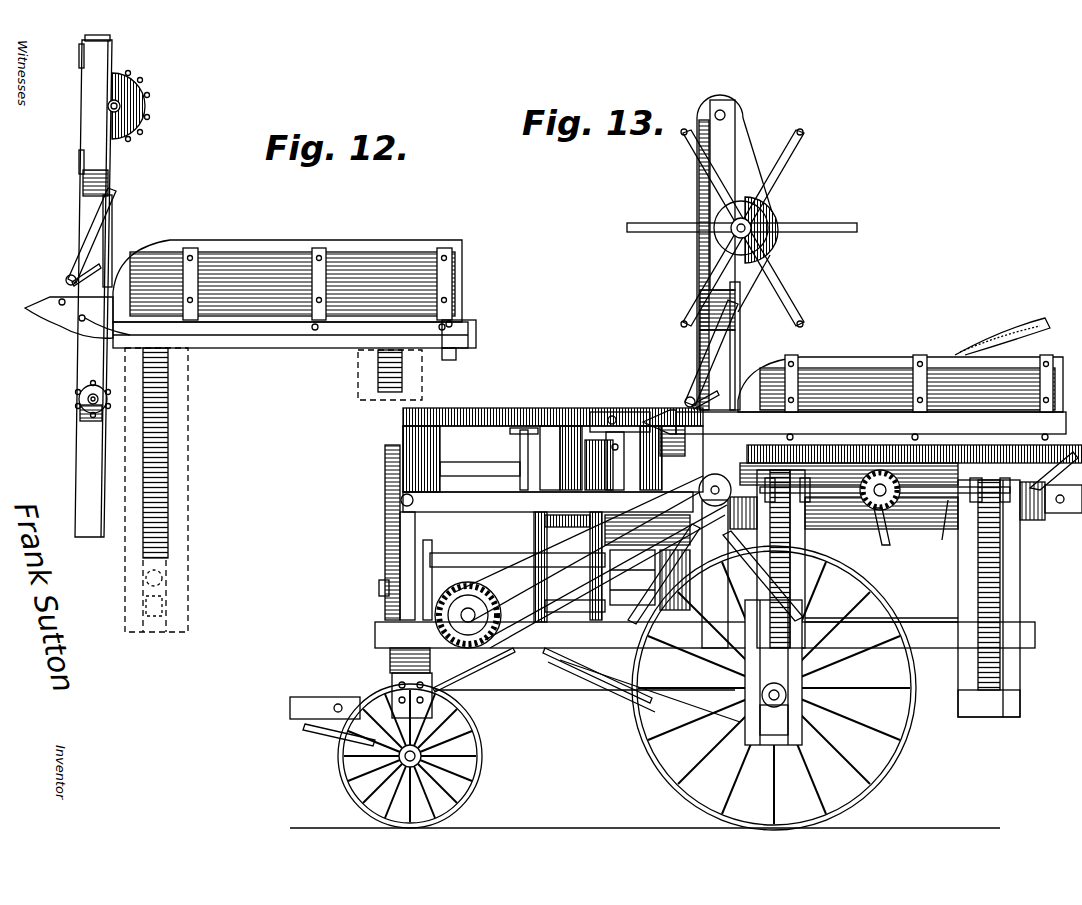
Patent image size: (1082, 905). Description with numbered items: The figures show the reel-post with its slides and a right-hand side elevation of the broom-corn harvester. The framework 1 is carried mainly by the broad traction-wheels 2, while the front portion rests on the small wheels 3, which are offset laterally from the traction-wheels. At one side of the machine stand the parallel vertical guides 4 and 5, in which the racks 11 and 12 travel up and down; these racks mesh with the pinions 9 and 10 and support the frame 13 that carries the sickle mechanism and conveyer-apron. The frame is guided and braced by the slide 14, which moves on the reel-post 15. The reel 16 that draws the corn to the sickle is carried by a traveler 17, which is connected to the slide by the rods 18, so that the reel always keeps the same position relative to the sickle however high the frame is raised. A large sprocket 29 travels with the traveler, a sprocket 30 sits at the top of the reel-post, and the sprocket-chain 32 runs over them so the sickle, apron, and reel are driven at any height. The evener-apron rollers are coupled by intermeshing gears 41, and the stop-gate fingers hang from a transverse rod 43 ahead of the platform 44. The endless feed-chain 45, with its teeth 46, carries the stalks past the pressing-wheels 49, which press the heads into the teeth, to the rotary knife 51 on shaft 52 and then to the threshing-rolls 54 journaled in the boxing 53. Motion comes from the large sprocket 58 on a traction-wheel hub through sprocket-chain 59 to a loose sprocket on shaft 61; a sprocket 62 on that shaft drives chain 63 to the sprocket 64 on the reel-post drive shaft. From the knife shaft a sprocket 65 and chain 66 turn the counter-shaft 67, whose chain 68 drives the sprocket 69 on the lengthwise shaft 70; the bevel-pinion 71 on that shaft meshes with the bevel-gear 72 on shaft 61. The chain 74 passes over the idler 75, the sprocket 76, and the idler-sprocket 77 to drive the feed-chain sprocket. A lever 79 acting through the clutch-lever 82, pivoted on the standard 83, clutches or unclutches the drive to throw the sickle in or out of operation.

In FIG. 13, the framework 1 is at (1015, 640).
In FIG. 13, the traction-wheels 2 is at (893, 755).
In FIG. 13, the small wheels 3 is at (482, 772).
In FIG. 12, the guide 4 is at (184, 470).
In FIG. 13, the guide 4 is at (800, 550).
In FIG. 12, the guide 5 is at (360, 396).
In FIG. 13, the guide 5 is at (1018, 560).
In FIG. 13, the pinion 9 is at (870, 490).
In FIG. 13, the pinion 10 is at (1000, 518).
In FIG. 12, the rack 11 is at (170, 384).
In FIG. 13, the rack 11 is at (790, 590).
In FIG. 12, the rack 12 is at (378, 370).
In FIG. 13, the rack 12 is at (1000, 588).
In FIG. 12, the frame 13 is at (365, 258).
In FIG. 13, the frame 13 is at (876, 364).
In FIG. 12, the slide 14 is at (100, 328).
In FIG. 13, the slide 14 is at (686, 400).
In FIG. 12, the reel-post 15 is at (106, 244).
In FIG. 13, the reel-post 15 is at (726, 364).
In FIG. 13, the reel 16 is at (832, 222).
In FIG. 12, the traveler 17 is at (92, 131).
In FIG. 13, the traveler 17 is at (713, 258).
In FIG. 12, the rods 18 is at (113, 205).
In FIG. 13, the rods 18 is at (695, 382).
In FIG. 12, the large sprocket-wheel 29 is at (150, 104).
In FIG. 13, the large sprocket-wheel 29 is at (777, 243).
In FIG. 13, the sprocket 30 is at (738, 104).
In FIG. 13, the sprocket-chain 32 is at (750, 292).
In FIG. 13, the intermeshing gears 41 is at (614, 500).
In FIG. 13, the transverse rod 43 is at (610, 414).
In FIG. 13, the platform 44 is at (463, 526).
In FIG. 13, the feed-chain 45 is at (556, 500).
In FIG. 13, the teeth 46 is at (534, 548).
In FIG. 13, the pressing-wheels 49 is at (563, 426).
In FIG. 13, the rotary knife 51 is at (520, 455).
In FIG. 13, the shaft 52 is at (470, 463).
In FIG. 13, the boxing 53 is at (584, 500).
In FIG. 13, the threshing-rolls 54 is at (664, 574).
In FIG. 13, the large sprocket 58 is at (822, 684).
In FIG. 13, the sprocket-chain 59 is at (590, 690).
In FIG. 13, the shaft 61 is at (455, 628).
In FIG. 13, the sprocket 62 is at (375, 697).
In FIG. 13, the chain 63 is at (527, 639).
In FIG. 12, the sprocket 64 is at (78, 399).
In FIG. 13, the sprocket 64 is at (714, 574).
In FIG. 13, the sprocket 65 is at (385, 455).
In FIG. 13, the chain 66 is at (400, 506).
In FIG. 13, the counter-shaft 67 is at (517, 552).
In FIG. 13, the chain 68 is at (660, 639).
In FIG. 13, the sprocket 69 is at (617, 639).
In FIG. 13, the shaft 70 is at (910, 620).
In FIG. 13, the bevel-pinion 71 is at (508, 668).
In FIG. 13, the bevel-gear 72 is at (467, 608).
In FIG. 13, the chain 74 is at (504, 526).
In FIG. 13, the idler 75 is at (545, 598).
In FIG. 13, the sprocket 76 is at (577, 639).
In FIG. 13, the idler-sprocket 77 is at (548, 501).
In FIG. 13, the lever 79 is at (403, 420).
In FIG. 13, the clutch-lever 82 is at (397, 592).
In FIG. 13, the standard 83 is at (435, 568).